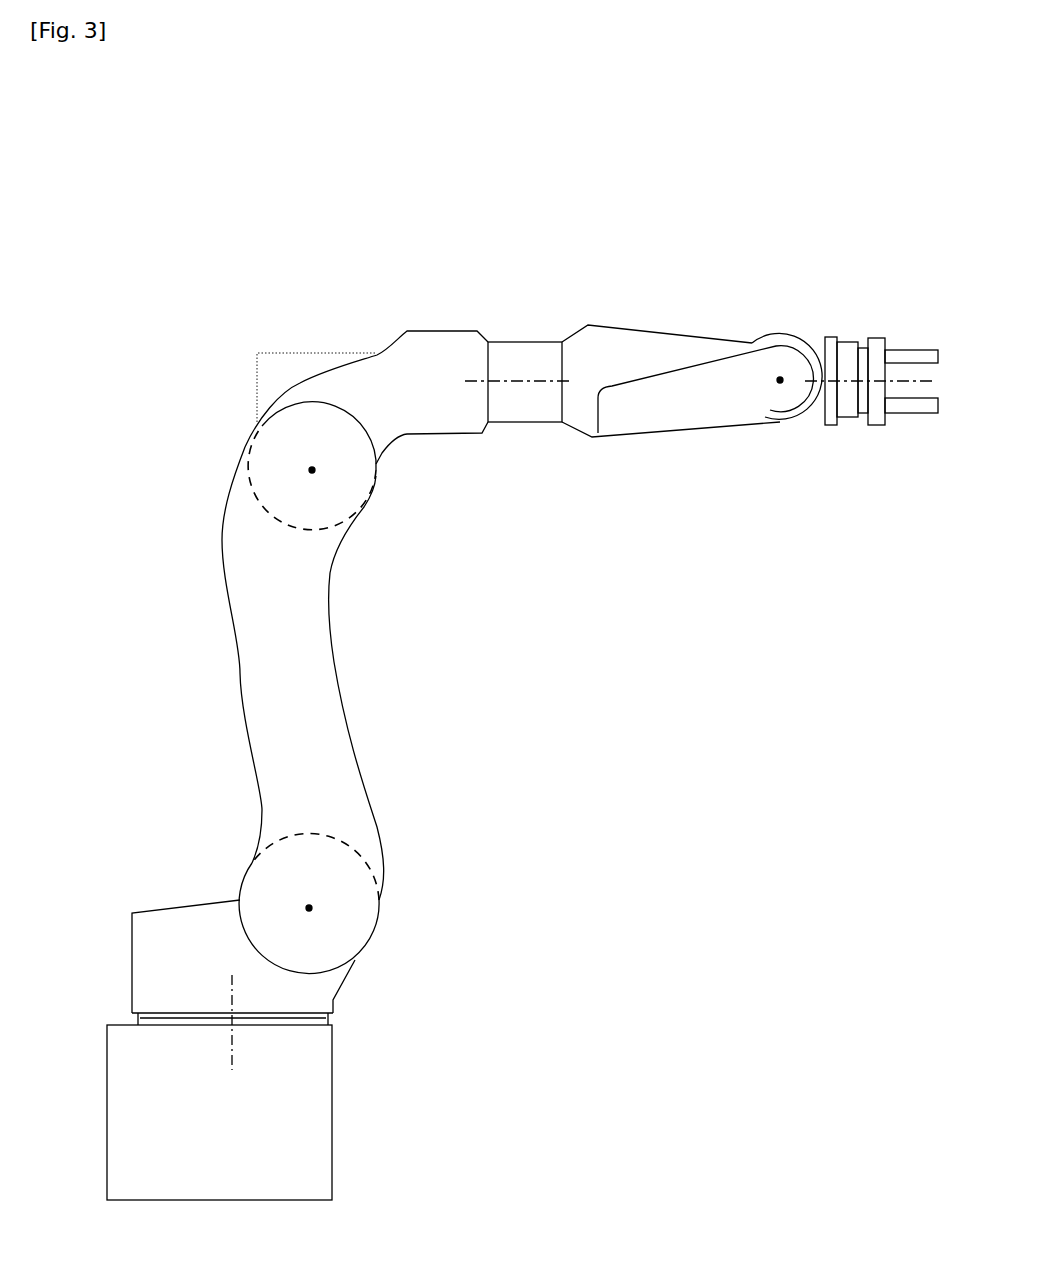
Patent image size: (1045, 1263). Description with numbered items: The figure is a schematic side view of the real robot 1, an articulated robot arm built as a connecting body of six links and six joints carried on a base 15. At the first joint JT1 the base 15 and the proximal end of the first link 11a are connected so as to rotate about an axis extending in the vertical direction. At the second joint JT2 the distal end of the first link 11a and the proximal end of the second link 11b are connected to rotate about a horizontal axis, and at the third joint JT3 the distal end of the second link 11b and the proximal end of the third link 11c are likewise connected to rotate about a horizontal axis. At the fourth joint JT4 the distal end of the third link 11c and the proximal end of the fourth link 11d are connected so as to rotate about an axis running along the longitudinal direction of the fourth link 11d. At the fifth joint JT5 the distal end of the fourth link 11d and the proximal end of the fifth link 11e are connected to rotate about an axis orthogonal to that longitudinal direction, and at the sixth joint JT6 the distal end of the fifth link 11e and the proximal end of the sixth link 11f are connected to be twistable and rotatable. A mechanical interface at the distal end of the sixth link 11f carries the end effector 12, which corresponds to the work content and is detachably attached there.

The real robot 1 is at (528, 148).
The first link 11a is at (172, 903).
The second link 11b is at (240, 677).
The third link 11c is at (389, 342).
The fourth link 11d is at (672, 337).
The fifth link 11e is at (828, 337).
The sixth link 11f is at (861, 345).
The end effector 12 is at (908, 349).
The base 15 is at (333, 1112).
The first joint JT1 is at (337, 1022).
The second joint JT2 is at (383, 928).
The third joint JT3 is at (242, 448).
The fourth joint JT4 is at (528, 340).
The fifth joint JT5 is at (782, 426).
The sixth joint JT6 is at (862, 426).